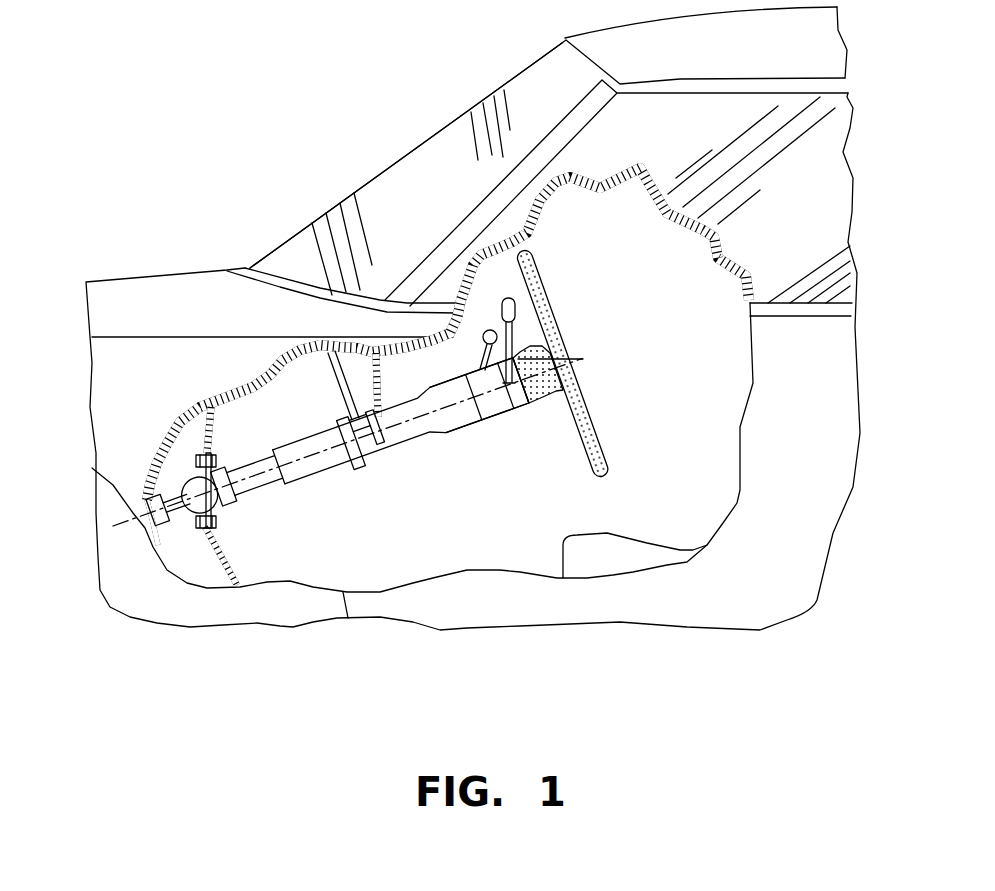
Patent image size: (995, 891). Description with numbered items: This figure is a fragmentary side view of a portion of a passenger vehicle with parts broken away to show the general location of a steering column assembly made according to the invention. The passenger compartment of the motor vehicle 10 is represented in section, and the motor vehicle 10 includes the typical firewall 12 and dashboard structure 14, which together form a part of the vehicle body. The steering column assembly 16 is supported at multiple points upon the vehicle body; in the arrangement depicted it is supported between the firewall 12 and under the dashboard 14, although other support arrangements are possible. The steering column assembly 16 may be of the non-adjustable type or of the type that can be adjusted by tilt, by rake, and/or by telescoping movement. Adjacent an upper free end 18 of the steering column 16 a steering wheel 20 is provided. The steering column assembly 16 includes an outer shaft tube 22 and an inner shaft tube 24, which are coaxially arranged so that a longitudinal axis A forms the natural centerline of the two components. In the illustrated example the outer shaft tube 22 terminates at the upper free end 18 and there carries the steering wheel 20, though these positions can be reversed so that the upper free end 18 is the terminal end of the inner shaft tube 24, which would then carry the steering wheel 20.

The motor vehicle 10 is at (200, 263).
The firewall 12 is at (193, 413).
The dashboard structure 14 is at (404, 345).
The steering column assembly 16 is at (479, 430).
The upper free end 18 is at (535, 405).
The steering wheel 20 is at (525, 250).
The outer shaft tube 22 is at (460, 383).
The inner shaft tube 24 is at (402, 430).
The longitudinal axis A is at (92, 468).